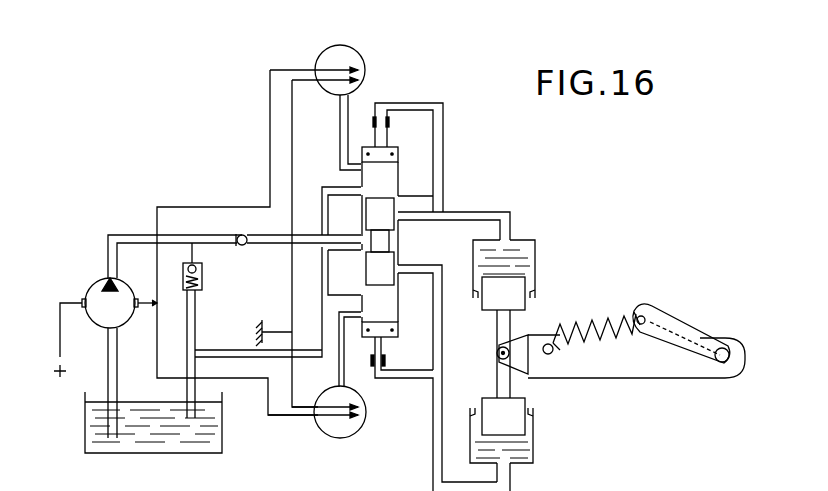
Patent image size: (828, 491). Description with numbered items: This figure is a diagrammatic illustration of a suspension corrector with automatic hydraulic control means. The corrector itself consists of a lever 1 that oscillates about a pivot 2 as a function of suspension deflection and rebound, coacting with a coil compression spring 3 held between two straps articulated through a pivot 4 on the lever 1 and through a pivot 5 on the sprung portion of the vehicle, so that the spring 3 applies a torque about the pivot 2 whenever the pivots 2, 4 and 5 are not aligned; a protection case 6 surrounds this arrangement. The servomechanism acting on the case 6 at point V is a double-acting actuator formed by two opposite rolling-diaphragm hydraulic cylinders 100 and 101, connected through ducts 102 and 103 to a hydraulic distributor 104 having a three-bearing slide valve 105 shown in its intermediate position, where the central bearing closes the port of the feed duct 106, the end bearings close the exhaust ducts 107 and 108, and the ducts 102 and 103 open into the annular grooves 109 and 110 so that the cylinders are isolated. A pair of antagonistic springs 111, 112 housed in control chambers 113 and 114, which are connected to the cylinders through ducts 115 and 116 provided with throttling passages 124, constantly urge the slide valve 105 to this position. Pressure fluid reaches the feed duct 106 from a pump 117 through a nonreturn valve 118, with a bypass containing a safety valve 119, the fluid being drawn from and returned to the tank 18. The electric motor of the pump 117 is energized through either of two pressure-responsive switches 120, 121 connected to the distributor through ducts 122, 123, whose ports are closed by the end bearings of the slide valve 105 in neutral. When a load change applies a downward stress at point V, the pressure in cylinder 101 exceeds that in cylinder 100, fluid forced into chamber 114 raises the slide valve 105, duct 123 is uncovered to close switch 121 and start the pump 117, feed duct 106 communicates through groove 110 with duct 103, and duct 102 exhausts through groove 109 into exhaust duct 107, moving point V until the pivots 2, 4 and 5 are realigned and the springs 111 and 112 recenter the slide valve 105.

The lever 1 is at (697, 337).
The pivot 2 is at (727, 347).
The coil compression spring 3 is at (638, 314).
The pivot 4 is at (674, 317).
The pivot 5 is at (550, 340).
The protection case 6 is at (636, 378).
The tank 18 is at (150, 455).
The hydraulic cylinder 100 is at (538, 244).
The hydraulic cylinder 101 is at (520, 448).
The duct 102 is at (490, 212).
The duct 103 is at (444, 346).
The hydraulic distributor 104 is at (404, 231).
The three-bearing slide valve 105 is at (392, 241).
The feed duct 106 is at (268, 232).
The exhaust duct 107 is at (332, 188).
The exhaust duct 108 is at (342, 290).
The annular groove 109 is at (403, 206).
The annular groove 110 is at (393, 280).
The antagonistic spring 111 is at (400, 158).
The antagonistic spring 112 is at (393, 330).
The slide-valve control chamber 113 is at (372, 150).
The slide-valve control chamber 114 is at (384, 344).
The duct 115 is at (415, 104).
The duct 116 is at (418, 380).
The pump 117 is at (105, 297).
The nonreturn valve 118 is at (244, 246).
The safety valve 119 is at (203, 285).
The pressure-responsive switch 120 is at (360, 62).
The pressure-responsive switch 121 is at (340, 440).
The duct 122 is at (333, 128).
The duct 123 is at (336, 363).
The throttling passage 124 is at (366, 362).
The point V is at (497, 357).